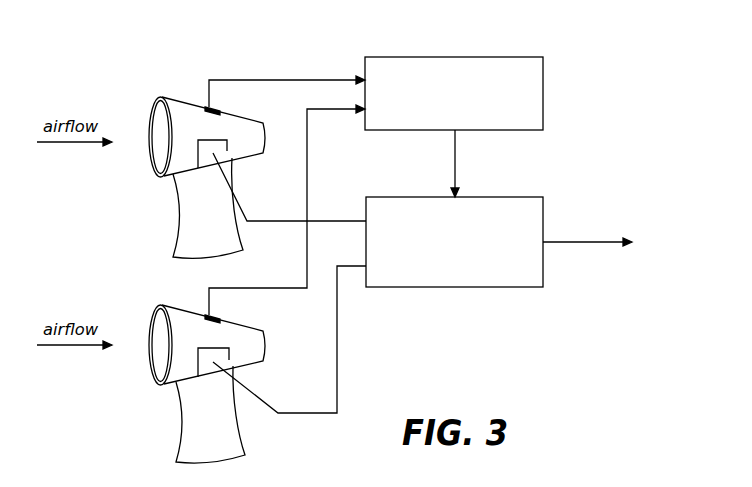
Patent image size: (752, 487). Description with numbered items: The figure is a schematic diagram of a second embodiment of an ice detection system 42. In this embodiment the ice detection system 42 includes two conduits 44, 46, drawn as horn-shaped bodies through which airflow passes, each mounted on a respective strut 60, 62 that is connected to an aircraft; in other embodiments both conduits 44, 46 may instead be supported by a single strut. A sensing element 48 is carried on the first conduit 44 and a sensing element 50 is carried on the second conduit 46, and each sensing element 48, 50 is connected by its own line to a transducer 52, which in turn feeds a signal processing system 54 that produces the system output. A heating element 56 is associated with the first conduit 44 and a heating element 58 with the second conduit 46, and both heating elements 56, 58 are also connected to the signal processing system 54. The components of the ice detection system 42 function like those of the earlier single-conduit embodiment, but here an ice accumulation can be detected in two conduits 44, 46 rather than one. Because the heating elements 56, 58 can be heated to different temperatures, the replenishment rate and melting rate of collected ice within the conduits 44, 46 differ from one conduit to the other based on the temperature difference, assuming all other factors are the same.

The ice detection system 42 is at (633, 149).
The conduit 44 is at (180, 97).
The conduit 46 is at (158, 306).
The sensing element 48 is at (205, 106).
The sensing element 50 is at (209, 316).
The transducer 52 is at (483, 57).
The signal processing system 54 is at (463, 287).
The heating element 56 is at (195, 200).
The heating element 58 is at (204, 383).
The strut 60 is at (197, 229).
The strut 62 is at (197, 428).